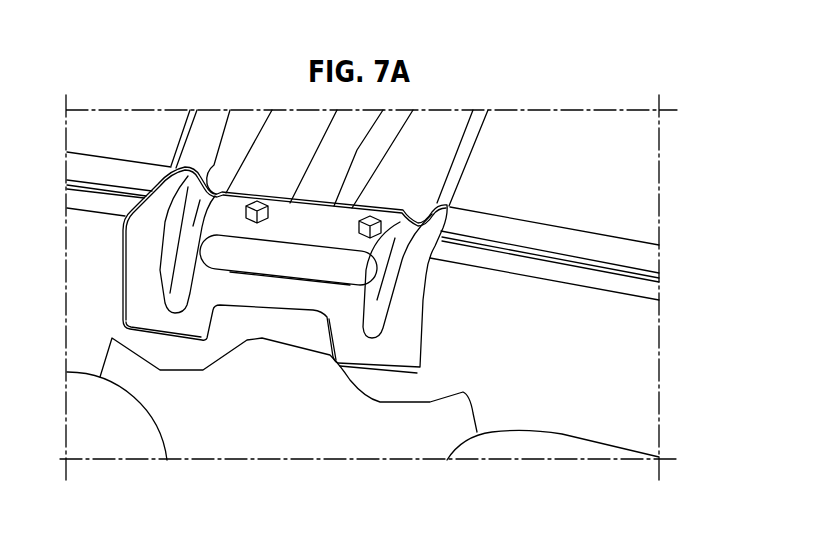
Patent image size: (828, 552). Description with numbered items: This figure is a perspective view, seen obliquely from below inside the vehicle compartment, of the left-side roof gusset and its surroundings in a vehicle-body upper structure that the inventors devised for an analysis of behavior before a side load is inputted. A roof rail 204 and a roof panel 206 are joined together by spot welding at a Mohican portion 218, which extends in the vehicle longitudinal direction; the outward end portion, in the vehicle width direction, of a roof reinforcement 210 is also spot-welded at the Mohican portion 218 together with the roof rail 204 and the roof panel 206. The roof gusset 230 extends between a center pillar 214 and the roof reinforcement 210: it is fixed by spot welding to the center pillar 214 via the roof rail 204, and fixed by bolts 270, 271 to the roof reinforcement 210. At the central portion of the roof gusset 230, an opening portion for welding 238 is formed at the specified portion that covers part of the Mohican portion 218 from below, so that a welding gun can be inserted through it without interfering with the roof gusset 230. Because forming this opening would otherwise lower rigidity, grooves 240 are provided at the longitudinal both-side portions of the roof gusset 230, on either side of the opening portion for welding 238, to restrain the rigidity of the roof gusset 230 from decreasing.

The roof rail 204 is at (585, 418).
The roof panel 206 is at (640, 184).
The roof reinforcement 210 is at (437, 143).
The center pillar 214 is at (167, 433).
The Mohican portion 218 is at (587, 277).
The roof gusset 230 is at (428, 311).
The opening portion for welding 238 is at (274, 278).
The grooves 240 is at (209, 180).
The bolt 270 is at (370, 232).
The bolt 271 is at (252, 218).